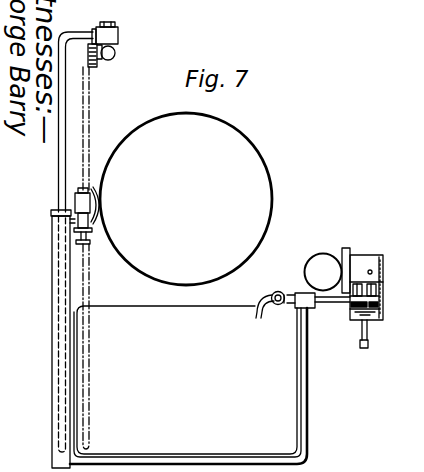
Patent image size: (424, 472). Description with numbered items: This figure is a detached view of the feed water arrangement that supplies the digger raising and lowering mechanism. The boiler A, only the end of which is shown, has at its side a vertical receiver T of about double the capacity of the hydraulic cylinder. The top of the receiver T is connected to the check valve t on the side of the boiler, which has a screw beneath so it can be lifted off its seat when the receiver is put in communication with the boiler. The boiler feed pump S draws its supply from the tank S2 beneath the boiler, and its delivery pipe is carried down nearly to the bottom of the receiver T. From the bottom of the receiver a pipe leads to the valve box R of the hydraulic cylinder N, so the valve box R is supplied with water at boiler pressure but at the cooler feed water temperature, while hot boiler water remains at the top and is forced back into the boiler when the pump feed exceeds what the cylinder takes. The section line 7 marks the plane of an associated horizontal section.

The boiler feed pump S is at (116, 54).
The check valve t is at (99, 227).
The receiver T is at (52, 343).
The boiler A is at (186, 199).
The tank S2 is at (210, 378).
The cylinder N is at (320, 254).
The valve box R is at (364, 262).
The section line 7 is at (423, 150).